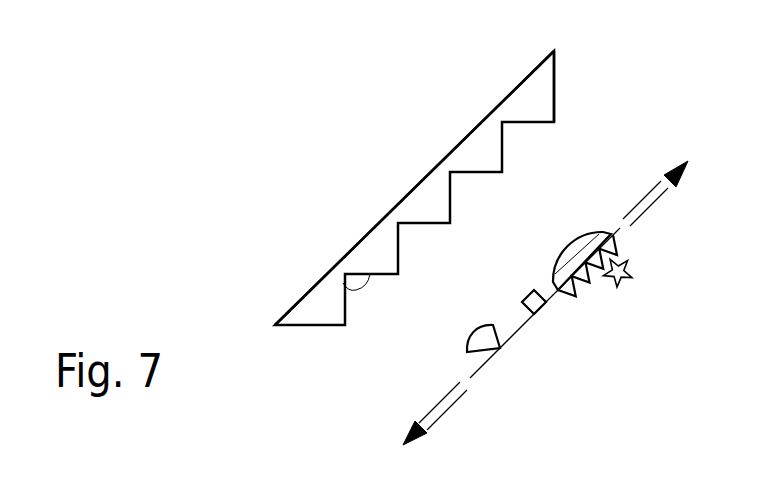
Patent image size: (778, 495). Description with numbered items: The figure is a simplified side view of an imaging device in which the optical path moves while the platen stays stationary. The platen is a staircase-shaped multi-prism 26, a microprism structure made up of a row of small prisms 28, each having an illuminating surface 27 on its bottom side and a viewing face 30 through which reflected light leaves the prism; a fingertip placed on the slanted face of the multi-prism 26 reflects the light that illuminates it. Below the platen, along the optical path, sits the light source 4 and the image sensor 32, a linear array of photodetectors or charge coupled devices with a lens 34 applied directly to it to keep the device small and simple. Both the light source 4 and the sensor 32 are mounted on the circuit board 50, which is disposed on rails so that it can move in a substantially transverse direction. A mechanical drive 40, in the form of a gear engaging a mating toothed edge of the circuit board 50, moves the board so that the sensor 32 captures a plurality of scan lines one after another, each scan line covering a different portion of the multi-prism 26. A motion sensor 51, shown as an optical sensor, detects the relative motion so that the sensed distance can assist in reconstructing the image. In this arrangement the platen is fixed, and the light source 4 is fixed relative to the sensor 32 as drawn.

The light source 4 is at (492, 347).
The multi-prism 26 is at (417, 187).
The illuminating surface 27 is at (343, 283).
The small prism 28 is at (483, 157).
The viewing face of prism 30 is at (555, 78).
The image sensor 32 is at (580, 293).
The lens 34 is at (566, 262).
The mechanical drive 40 is at (628, 267).
The circuit board 50 is at (520, 332).
The motion sensor 51 is at (545, 310).